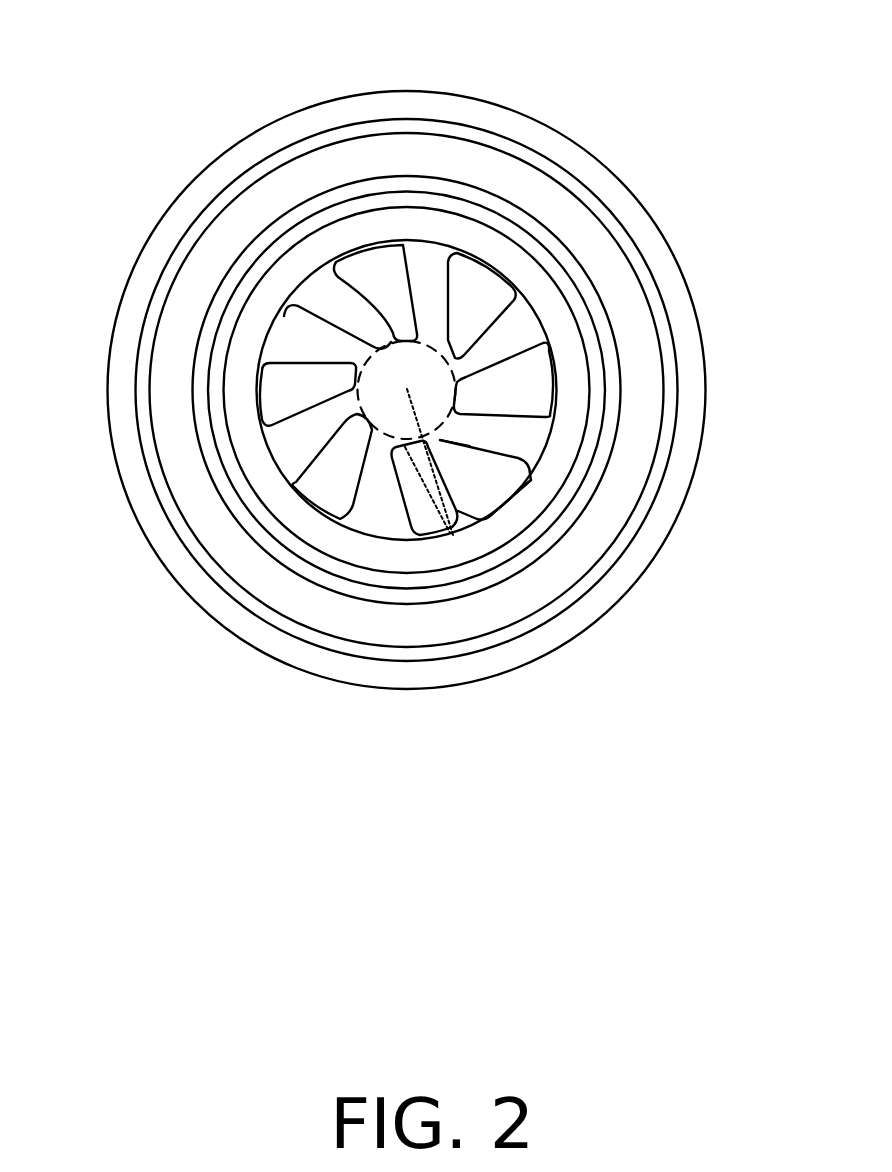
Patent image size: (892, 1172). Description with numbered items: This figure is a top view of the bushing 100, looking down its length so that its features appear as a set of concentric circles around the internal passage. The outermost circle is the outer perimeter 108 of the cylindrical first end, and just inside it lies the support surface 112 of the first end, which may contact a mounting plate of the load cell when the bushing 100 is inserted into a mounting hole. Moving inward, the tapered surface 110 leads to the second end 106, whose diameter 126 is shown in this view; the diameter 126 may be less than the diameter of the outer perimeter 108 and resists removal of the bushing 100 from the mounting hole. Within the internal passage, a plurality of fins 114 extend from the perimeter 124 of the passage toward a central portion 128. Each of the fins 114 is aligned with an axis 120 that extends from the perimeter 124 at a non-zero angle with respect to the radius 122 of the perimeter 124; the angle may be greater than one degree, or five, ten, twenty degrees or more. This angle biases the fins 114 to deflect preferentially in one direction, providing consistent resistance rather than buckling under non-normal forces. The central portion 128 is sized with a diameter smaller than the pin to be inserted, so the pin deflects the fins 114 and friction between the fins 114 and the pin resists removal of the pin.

The bushing 100 is at (116, 125).
The second end 106 is at (568, 352).
The outer perimeter 108 is at (463, 92).
The tapered surface 110 is at (580, 277).
The support surface 112 is at (537, 152).
The fins 114 is at (428, 437).
The axis 120 is at (437, 490).
The radius 122 is at (437, 487).
The perimeter 124 is at (520, 493).
The diameter 126 is at (553, 230).
The central portion 128 is at (440, 437).